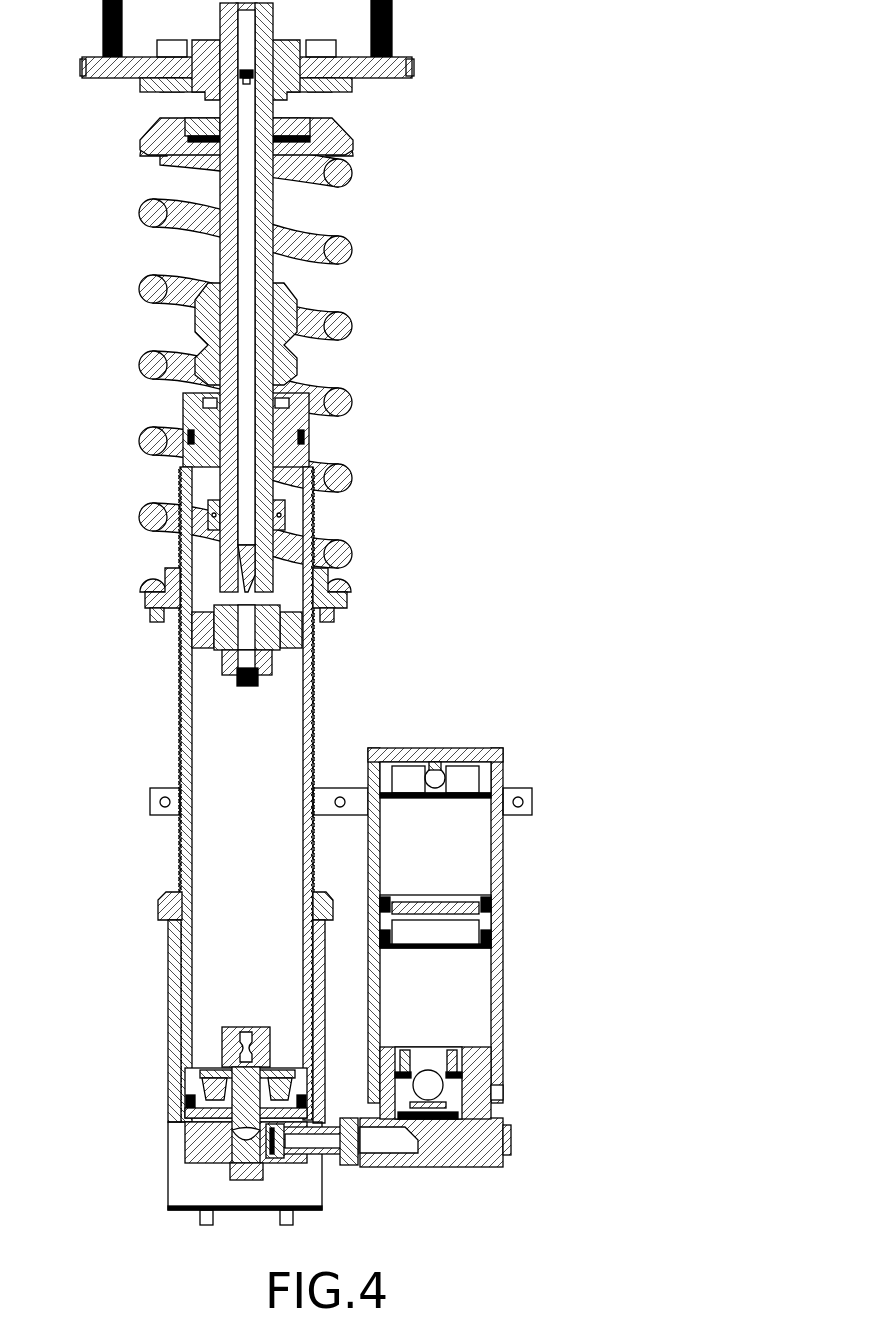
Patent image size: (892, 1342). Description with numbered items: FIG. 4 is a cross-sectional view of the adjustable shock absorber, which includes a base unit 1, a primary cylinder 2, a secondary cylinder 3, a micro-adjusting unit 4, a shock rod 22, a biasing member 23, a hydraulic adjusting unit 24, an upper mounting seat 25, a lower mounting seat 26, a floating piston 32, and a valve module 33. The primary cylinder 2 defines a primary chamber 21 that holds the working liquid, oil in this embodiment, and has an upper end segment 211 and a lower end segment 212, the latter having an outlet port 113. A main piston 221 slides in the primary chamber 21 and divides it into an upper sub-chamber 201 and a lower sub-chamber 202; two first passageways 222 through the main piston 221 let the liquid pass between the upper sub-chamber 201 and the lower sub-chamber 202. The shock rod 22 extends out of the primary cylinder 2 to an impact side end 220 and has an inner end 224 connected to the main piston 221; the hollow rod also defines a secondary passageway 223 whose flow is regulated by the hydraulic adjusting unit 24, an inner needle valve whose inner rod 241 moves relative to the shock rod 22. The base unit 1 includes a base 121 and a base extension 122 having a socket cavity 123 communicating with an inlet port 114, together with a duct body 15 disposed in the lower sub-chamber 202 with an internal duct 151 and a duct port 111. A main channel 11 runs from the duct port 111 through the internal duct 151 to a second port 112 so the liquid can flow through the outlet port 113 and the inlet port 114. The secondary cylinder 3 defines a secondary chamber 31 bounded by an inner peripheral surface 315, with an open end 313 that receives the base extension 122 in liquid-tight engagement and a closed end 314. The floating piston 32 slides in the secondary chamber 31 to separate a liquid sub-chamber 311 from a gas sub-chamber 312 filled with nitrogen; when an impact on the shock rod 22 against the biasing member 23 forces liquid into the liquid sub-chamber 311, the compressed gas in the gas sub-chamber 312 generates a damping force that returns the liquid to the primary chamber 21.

The base unit 1 is at (208, 1145).
The primary cylinder 2 is at (245, 563).
The secondary cylinder 3 is at (518, 964).
The micro-adjusting unit 4 is at (528, 1141).
The main channel 11 is at (322, 1160).
The duct body 15 is at (205, 1170).
The primary chamber 21 is at (215, 714).
The shock rod 22 is at (265, 200).
The biasing member 23 is at (346, 251).
The hydraulic adjusting unit 24 is at (347, 334).
The inner rod 241 is at (250, 337).
The upper mounting seat 25 is at (320, 132).
The lower mounting seat 26 is at (340, 597).
The secondary chamber 31 is at (478, 806).
The floating piston 32 is at (488, 930).
The valve module 33 is at (466, 1077).
The duct port 111 is at (230, 1053).
The second port 112 is at (430, 1120).
The outlet port 113 is at (310, 1150).
The inlet port 114 is at (360, 1142).
The base 121 is at (420, 1150).
The base extension 122 is at (472, 1100).
The socket cavity 123 is at (412, 1050).
The internal duct 151 is at (205, 1093).
The upper sub-chamber 201 is at (290, 490).
The lower sub-chamber 202 is at (215, 860).
The upper end segment 211 is at (190, 412).
The lower end segment 212 is at (185, 1080).
The impact side end 220 is at (254, 30).
The main piston 221 is at (300, 632).
The first passageway 222 is at (207, 640).
The secondary passageway 223 is at (258, 684).
The inner end 224 is at (236, 673).
The liquid sub-chamber 311 is at (470, 972).
The gas sub-chamber 312 is at (455, 850).
The open end 313 is at (505, 1097).
The closed end 314 is at (470, 749).
The inner peripheral surface 315 is at (487, 1003).